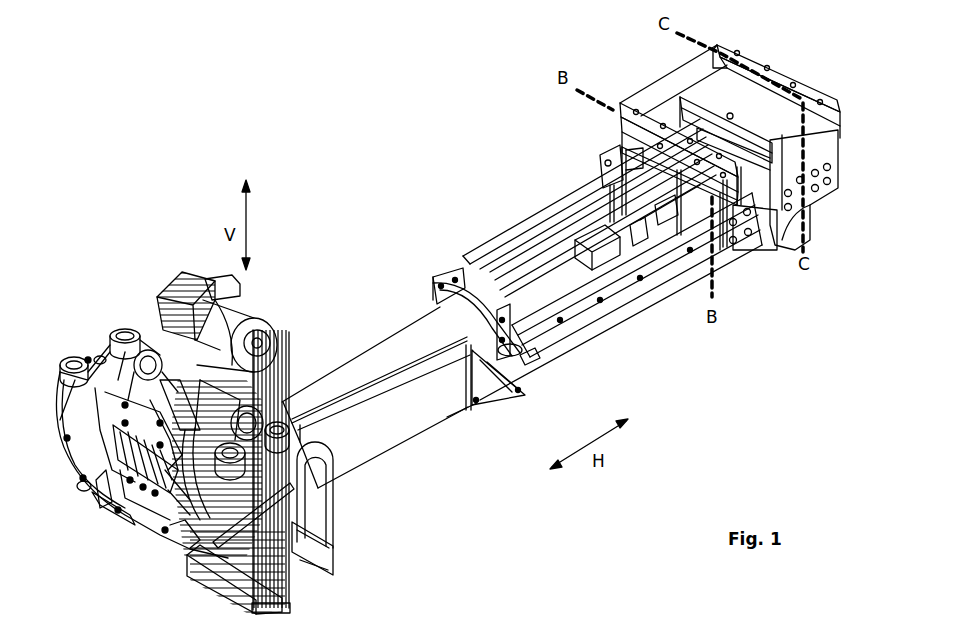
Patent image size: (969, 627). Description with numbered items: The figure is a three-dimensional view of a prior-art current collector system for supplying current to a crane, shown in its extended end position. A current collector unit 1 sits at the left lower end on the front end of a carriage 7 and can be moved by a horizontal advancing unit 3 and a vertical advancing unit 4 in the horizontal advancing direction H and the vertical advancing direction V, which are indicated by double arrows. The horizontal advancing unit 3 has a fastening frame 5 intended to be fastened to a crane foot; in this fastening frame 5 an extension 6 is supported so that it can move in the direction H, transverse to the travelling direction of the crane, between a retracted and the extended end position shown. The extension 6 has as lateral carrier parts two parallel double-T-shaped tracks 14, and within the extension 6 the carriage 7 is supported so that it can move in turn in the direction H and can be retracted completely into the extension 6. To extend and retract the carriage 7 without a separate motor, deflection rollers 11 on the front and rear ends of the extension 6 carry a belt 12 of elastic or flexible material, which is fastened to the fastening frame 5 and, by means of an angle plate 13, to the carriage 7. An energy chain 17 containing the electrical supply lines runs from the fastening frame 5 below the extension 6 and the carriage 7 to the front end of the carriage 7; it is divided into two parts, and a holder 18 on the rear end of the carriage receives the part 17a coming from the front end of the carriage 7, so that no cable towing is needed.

The current collector unit 1 is at (160, 508).
The horizontal advancing unit 3 is at (416, 233).
The vertical advancing unit 4 is at (98, 300).
The fastening frame 5 is at (637, 103).
The extension 6 is at (492, 243).
The carriage 7 is at (347, 355).
The deflection rollers 11 is at (530, 363).
The belt 12 is at (600, 327).
The angle plate 13 is at (563, 337).
The double-T-shaped tracks 14 is at (573, 208).
The energy chain 17 is at (433, 422).
The part of the energy chain 17a is at (362, 433).
The holder 18 is at (487, 397).